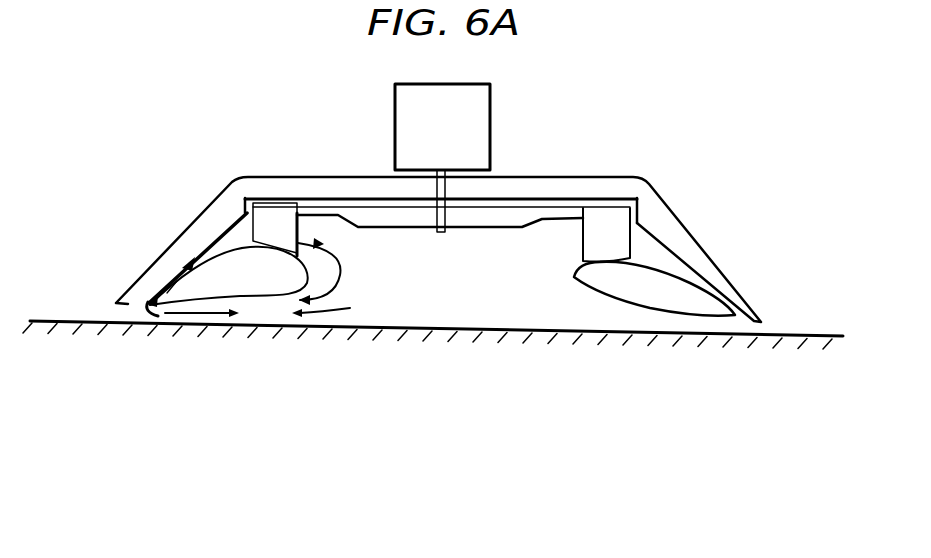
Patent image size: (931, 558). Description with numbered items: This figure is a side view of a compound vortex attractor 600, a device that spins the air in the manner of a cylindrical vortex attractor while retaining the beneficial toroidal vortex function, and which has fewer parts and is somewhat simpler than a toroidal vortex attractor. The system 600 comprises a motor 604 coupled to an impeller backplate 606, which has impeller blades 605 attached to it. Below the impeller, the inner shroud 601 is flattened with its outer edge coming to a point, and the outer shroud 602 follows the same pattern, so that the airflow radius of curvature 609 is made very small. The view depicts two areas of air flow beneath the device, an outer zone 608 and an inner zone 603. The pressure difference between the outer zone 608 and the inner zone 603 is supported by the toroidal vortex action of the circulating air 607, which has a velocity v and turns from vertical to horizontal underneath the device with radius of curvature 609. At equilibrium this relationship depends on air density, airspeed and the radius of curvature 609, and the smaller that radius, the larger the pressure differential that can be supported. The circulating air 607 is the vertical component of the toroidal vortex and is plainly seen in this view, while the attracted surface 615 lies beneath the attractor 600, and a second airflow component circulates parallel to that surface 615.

The compound vortex attractor 600 is at (757, 135).
The inner shroud 601 is at (660, 287).
The outer shroud 602 is at (643, 203).
The inner zone 603 is at (565, 250).
The motor 604 is at (490, 110).
The impeller blades 605 is at (268, 222).
The impeller backplate 606 is at (401, 221).
The circulating air 607 is at (240, 322).
The outer zone 608 is at (210, 240).
The airflow radius of curvature 609 is at (167, 293).
The attracted surface 615 is at (560, 336).